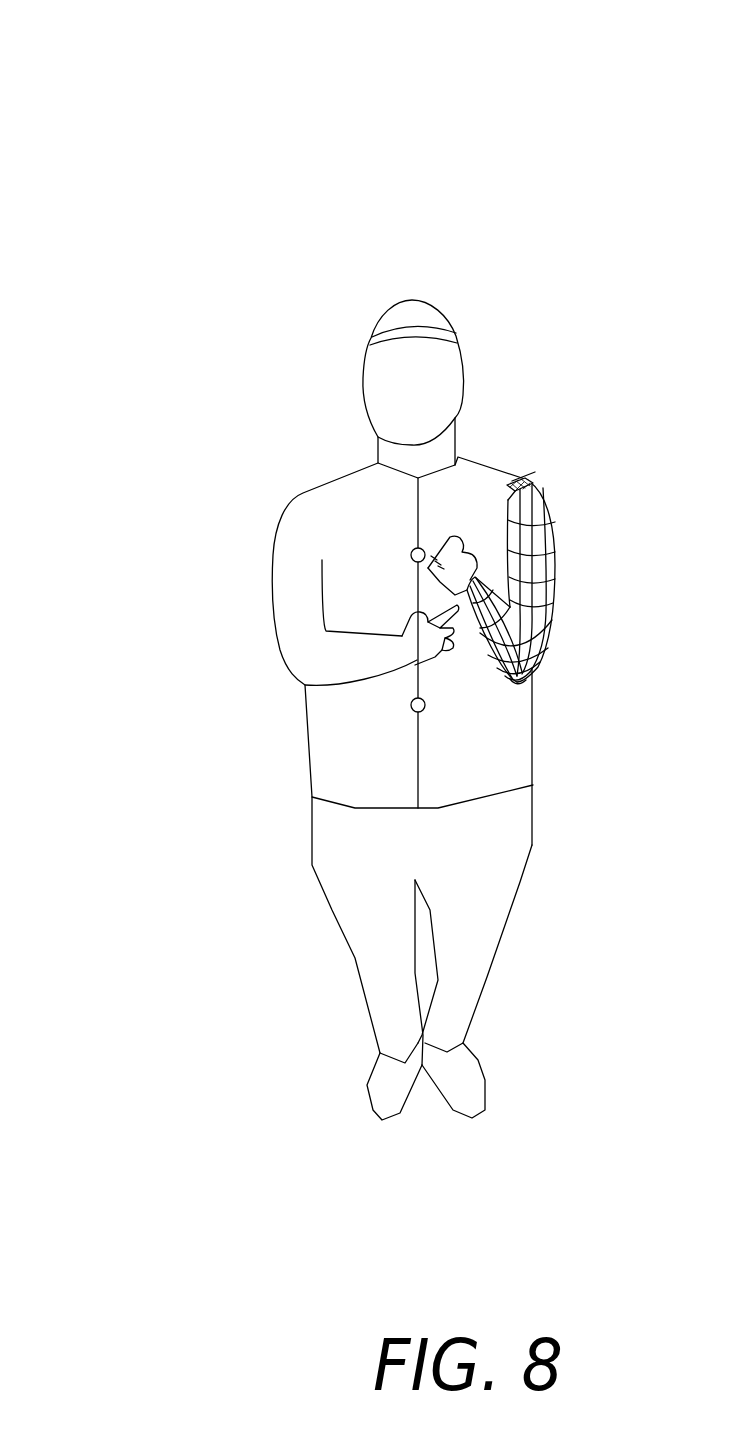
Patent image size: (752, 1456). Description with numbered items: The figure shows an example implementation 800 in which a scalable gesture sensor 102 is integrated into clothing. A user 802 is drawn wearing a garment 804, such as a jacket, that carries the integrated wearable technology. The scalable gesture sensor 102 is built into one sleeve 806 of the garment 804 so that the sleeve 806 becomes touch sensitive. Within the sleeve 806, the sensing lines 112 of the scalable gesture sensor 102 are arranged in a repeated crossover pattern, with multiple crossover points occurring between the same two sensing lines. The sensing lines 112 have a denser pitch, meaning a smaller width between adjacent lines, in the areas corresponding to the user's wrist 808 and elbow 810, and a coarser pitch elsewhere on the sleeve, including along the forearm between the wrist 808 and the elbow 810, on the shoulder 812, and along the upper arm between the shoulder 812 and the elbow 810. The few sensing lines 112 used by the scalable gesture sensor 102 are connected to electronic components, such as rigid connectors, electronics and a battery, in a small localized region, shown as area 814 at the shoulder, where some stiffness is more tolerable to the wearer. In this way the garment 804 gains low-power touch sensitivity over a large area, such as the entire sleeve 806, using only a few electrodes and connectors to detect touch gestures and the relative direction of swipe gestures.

The example implementation 800 is at (100, 50).
The user 802 is at (363, 377).
The garment 804 is at (322, 487).
The sleeve 806 is at (557, 570).
The wrist 808 is at (445, 595).
The elbow 810 is at (530, 692).
The shoulder 812 is at (546, 471).
The area 814 is at (527, 480).
The scalable gesture sensor 102 is at (548, 520).
The sensing lines 112 is at (550, 606).